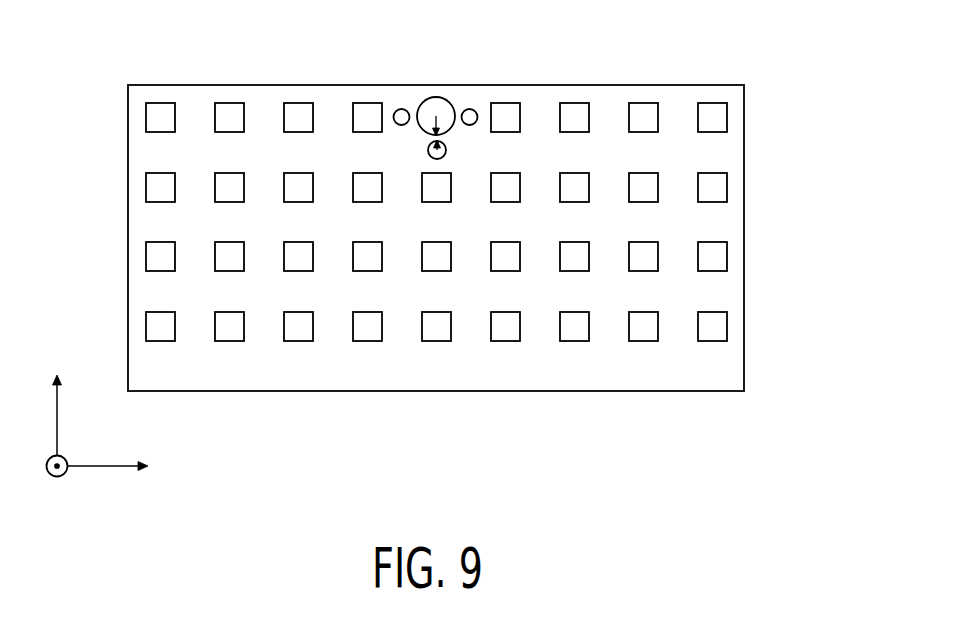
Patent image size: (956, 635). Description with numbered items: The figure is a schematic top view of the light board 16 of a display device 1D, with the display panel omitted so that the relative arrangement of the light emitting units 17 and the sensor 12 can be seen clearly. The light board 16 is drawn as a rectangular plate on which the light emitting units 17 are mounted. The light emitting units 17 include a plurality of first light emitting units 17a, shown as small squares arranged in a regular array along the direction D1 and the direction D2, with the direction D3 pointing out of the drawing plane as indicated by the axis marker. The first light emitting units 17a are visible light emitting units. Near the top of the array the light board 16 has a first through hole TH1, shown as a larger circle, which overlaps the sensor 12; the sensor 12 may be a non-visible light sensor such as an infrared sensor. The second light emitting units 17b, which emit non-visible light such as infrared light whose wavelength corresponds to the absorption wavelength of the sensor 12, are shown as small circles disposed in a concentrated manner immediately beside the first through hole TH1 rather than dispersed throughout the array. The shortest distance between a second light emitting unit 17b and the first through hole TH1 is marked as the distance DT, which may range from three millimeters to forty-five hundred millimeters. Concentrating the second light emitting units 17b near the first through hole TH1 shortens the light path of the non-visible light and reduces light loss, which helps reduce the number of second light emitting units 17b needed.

The display device 1D is at (494, 199).
The light board 16 is at (680, 98).
The light emitting units 17 is at (436, 174).
The first light emitting units 17a is at (229, 117).
The second light emitting units 17b is at (396, 113).
The sensor 12 is at (432, 71).
The first through hole TH1 is at (437, 107).
The distance DT is at (440, 141).
The direction D1 is at (126, 468).
The direction D2 is at (57, 399).
The direction D3 is at (41, 485).